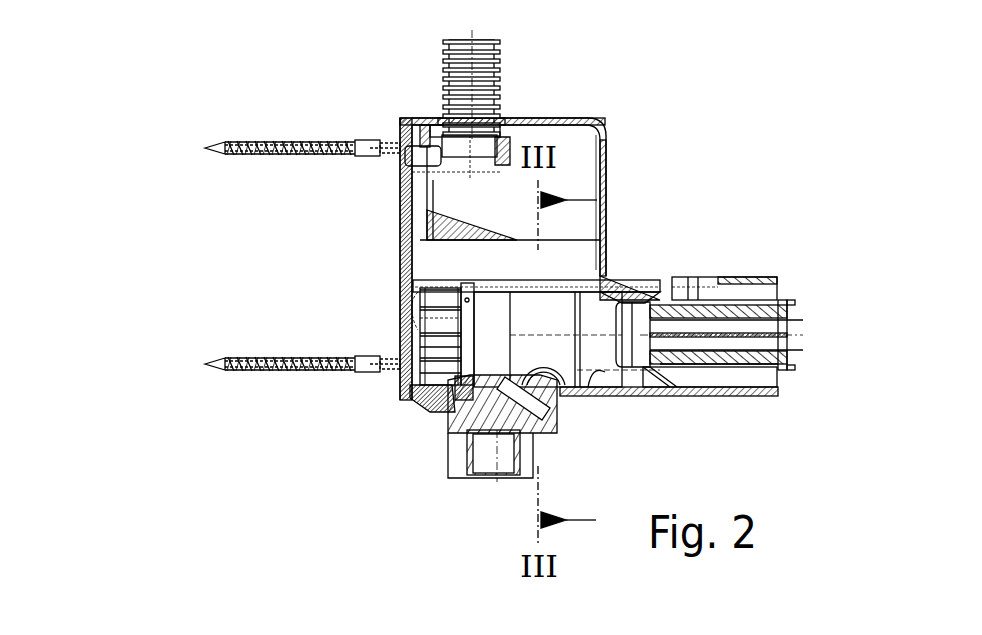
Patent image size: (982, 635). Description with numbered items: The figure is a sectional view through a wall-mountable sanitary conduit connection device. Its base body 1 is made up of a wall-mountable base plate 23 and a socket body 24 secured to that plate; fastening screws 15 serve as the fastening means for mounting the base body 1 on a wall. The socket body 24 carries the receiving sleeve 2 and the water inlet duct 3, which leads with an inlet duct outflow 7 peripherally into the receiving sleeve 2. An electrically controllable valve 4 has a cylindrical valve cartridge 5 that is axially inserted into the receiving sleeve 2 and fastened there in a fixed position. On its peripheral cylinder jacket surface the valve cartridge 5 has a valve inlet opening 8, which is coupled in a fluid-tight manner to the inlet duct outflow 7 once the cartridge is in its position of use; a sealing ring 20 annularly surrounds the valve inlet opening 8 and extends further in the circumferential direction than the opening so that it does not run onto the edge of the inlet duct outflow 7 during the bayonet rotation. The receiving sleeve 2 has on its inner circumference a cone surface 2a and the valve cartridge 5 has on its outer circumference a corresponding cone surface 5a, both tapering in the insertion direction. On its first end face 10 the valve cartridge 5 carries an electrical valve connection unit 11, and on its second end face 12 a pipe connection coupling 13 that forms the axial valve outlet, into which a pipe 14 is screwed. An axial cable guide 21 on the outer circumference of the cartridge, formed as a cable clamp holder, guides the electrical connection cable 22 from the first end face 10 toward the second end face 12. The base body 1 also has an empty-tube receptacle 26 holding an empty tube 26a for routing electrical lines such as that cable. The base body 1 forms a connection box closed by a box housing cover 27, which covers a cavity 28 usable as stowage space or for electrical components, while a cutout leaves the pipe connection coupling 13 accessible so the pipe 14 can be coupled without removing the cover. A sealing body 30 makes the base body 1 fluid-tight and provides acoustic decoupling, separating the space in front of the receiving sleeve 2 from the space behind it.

The base body 1 is at (400, 282).
The receiving sleeve 2 is at (470, 402).
The cone surface 2a is at (510, 373).
The water inlet duct 3 is at (518, 412).
The valve 4 is at (607, 367).
The valve cartridge 5 is at (710, 377).
The cone surface 5a is at (543, 310).
The inlet duct outflow 7 is at (562, 386).
The valve inlet opening 8 is at (545, 358).
The first end face 10 is at (442, 362).
The electrical valve connection unit 11 is at (432, 350).
The second end face 12 is at (623, 300).
The pipe connection coupling 13 is at (668, 366).
The pipe 14 is at (740, 378).
The fastening screws 15 is at (278, 143).
The sealing ring 20 is at (460, 338).
The cable guide 21 is at (462, 285).
The electrical connection cable 22 is at (608, 283).
The base plate 23 is at (400, 172).
The socket body 24 is at (400, 208).
The empty-tube receptacle 26 is at (508, 131).
The empty tube 26a is at (500, 62).
The box housing cover 27 is at (607, 148).
The cavity 28 is at (577, 150).
The sealing body 30 is at (400, 260).